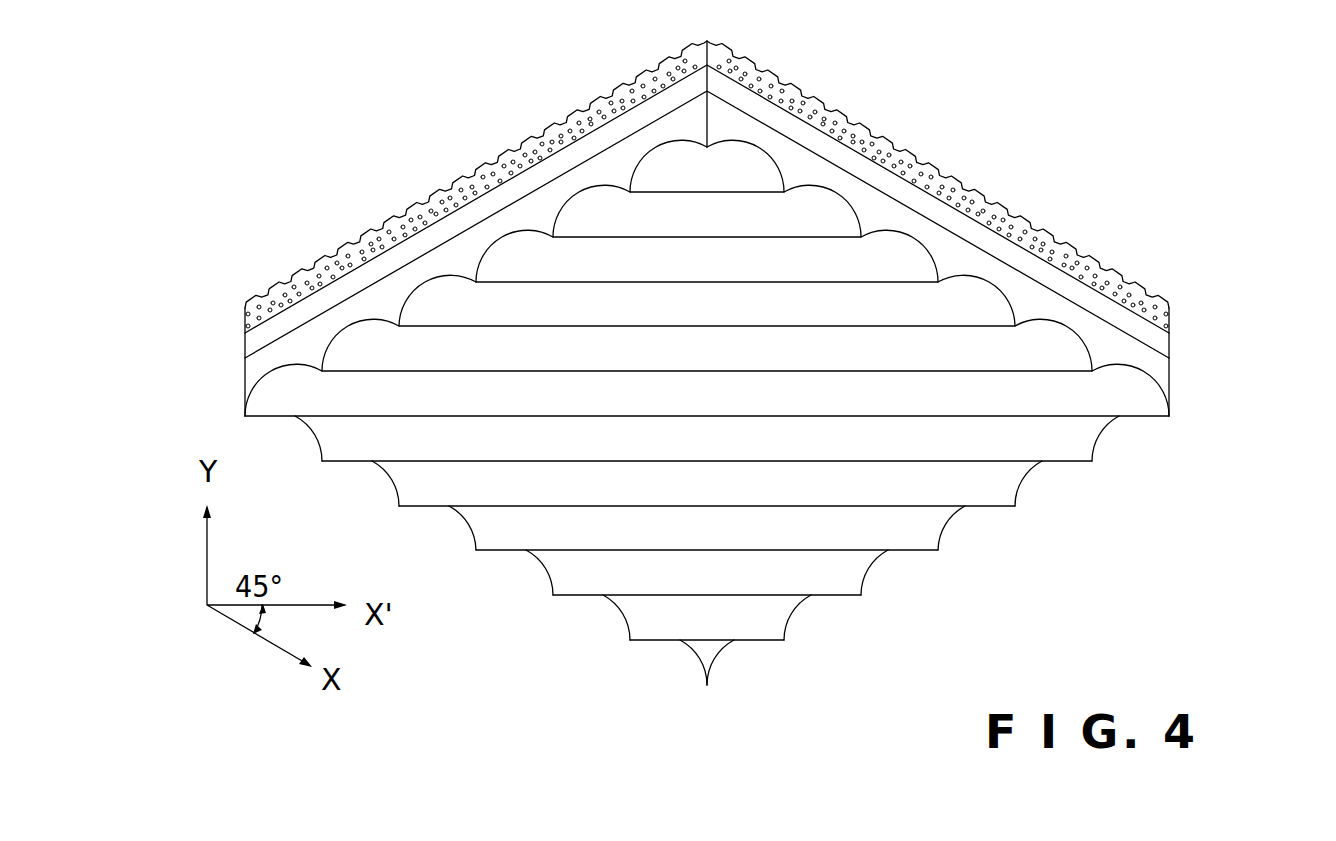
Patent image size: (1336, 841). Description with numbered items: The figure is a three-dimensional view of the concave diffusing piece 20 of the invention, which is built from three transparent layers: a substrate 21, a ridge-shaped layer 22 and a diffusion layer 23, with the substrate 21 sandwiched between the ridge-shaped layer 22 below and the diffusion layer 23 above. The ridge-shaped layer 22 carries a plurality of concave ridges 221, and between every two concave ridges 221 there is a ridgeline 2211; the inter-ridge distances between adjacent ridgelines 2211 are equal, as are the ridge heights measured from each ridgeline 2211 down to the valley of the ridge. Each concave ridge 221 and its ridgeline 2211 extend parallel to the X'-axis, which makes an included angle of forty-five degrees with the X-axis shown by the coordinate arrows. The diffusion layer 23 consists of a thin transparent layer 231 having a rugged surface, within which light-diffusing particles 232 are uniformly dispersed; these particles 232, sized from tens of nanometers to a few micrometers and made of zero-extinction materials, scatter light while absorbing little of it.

The concave diffusing piece 20 is at (760, 374).
The substrate 21 is at (1168, 346).
The ridge-shaped layer 22 is at (759, 363).
The diffusion layer 23 is at (760, 187).
The transparent layer 231 is at (1057, 248).
The light-diffusing particles 232 is at (973, 197).
The concave ridges 221 is at (707, 550).
The ridgeline 2211 is at (860, 553).